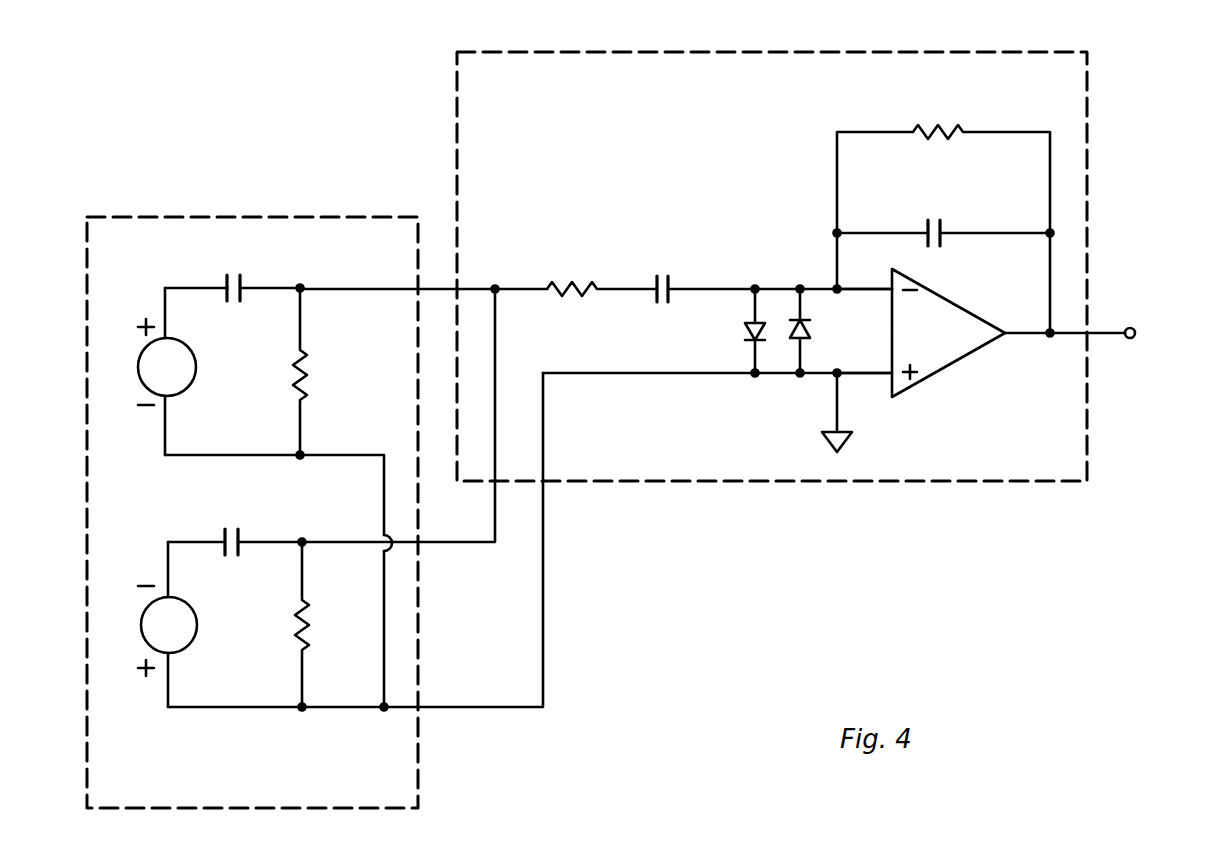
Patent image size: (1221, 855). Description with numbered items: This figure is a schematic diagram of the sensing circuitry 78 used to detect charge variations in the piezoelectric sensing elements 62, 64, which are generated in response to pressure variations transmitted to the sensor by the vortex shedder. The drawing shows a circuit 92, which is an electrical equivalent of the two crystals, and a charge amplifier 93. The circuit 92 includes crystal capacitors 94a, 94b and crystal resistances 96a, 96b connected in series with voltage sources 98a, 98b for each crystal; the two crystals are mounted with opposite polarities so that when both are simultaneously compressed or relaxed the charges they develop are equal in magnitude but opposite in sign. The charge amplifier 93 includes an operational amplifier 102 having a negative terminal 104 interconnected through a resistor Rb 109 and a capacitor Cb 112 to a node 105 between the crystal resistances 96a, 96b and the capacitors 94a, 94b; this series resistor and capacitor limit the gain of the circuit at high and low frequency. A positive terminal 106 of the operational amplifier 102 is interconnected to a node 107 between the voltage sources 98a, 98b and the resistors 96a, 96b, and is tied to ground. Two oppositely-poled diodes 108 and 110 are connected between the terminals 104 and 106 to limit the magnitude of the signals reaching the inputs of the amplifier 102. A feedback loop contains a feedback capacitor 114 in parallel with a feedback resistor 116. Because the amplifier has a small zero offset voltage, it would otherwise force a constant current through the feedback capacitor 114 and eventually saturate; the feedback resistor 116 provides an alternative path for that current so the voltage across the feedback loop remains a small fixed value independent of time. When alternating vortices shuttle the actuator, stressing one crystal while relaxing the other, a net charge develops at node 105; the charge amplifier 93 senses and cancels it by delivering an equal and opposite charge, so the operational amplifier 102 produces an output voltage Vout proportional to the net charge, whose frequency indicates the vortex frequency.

The piezoelectric sensing element 62 is at (252, 466).
The piezoelectric sensing element 64 is at (250, 212).
The circuit 92 is at (176, 776).
The crystal capacitor 94a is at (222, 283).
The crystal capacitor 94b is at (220, 537).
The crystal resistance 96a is at (291, 376).
The crystal resistance 96b is at (294, 631).
The voltage source 98a is at (186, 352).
The voltage source 98b is at (198, 623).
The node 105 is at (495, 287).
The node 107 is at (384, 711).
The sensing circuitry 78 is at (818, 536).
The charge amplifier 93 is at (690, 454).
The resistor Rb 109 is at (586, 281).
The capacitor Cb 112 is at (662, 303).
The diode 108 is at (750, 336).
The diode 110 is at (809, 337).
The negative terminal 104 is at (878, 292).
The positive terminal 106 is at (865, 377).
The operational amplifier 102 is at (944, 370).
The feedback resistor 116 is at (918, 128).
The feedback capacitor 114 is at (946, 228).